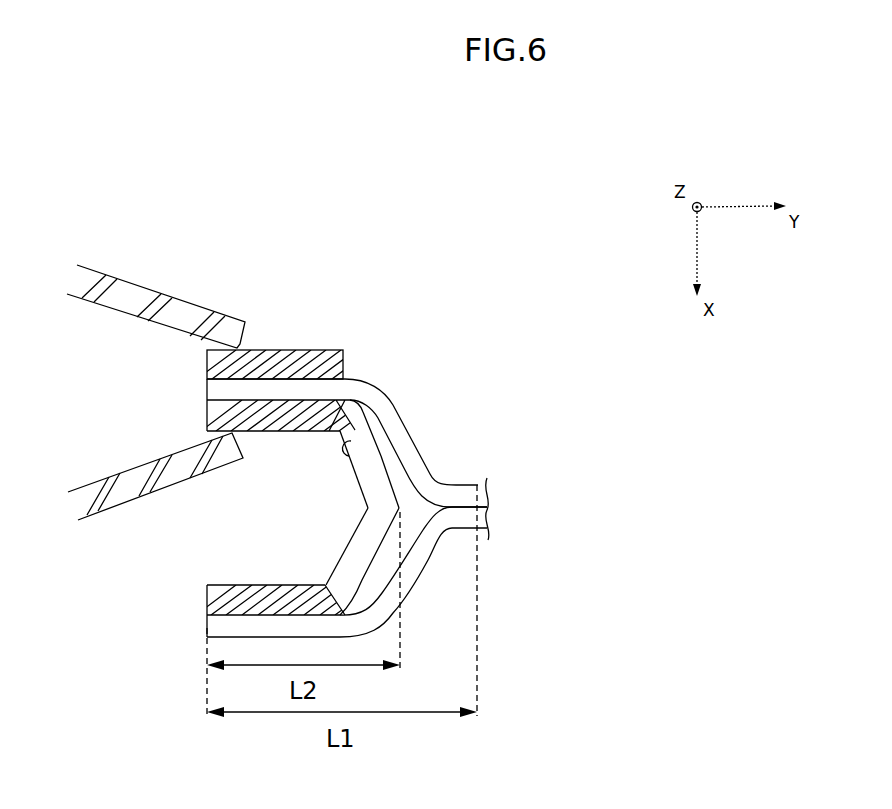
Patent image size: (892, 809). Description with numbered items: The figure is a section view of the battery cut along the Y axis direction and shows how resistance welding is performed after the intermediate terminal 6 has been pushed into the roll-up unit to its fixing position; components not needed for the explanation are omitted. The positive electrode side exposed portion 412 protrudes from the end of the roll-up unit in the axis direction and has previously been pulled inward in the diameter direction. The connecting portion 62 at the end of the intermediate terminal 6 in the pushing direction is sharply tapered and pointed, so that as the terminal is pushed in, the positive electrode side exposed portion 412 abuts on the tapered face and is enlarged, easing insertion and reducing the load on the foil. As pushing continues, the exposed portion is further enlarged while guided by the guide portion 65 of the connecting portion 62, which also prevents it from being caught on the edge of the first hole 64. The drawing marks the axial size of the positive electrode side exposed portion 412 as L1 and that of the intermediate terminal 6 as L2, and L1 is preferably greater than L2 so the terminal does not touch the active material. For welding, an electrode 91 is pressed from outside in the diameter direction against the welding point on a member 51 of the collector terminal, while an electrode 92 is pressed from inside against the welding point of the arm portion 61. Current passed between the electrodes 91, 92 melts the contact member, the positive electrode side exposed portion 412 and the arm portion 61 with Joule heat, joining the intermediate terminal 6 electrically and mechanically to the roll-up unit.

The intermediate terminal 6 is at (332, 473).
The arm portion 61 is at (282, 432).
The connecting portion 62 is at (381, 540).
The first hole 64 is at (344, 447).
The guide portion 65 is at (356, 407).
The bus bar 51 is at (305, 350).
The electrode 91 is at (132, 284).
The electrode 92 is at (135, 500).
The positive electrode side exposed portion 412 is at (396, 412).